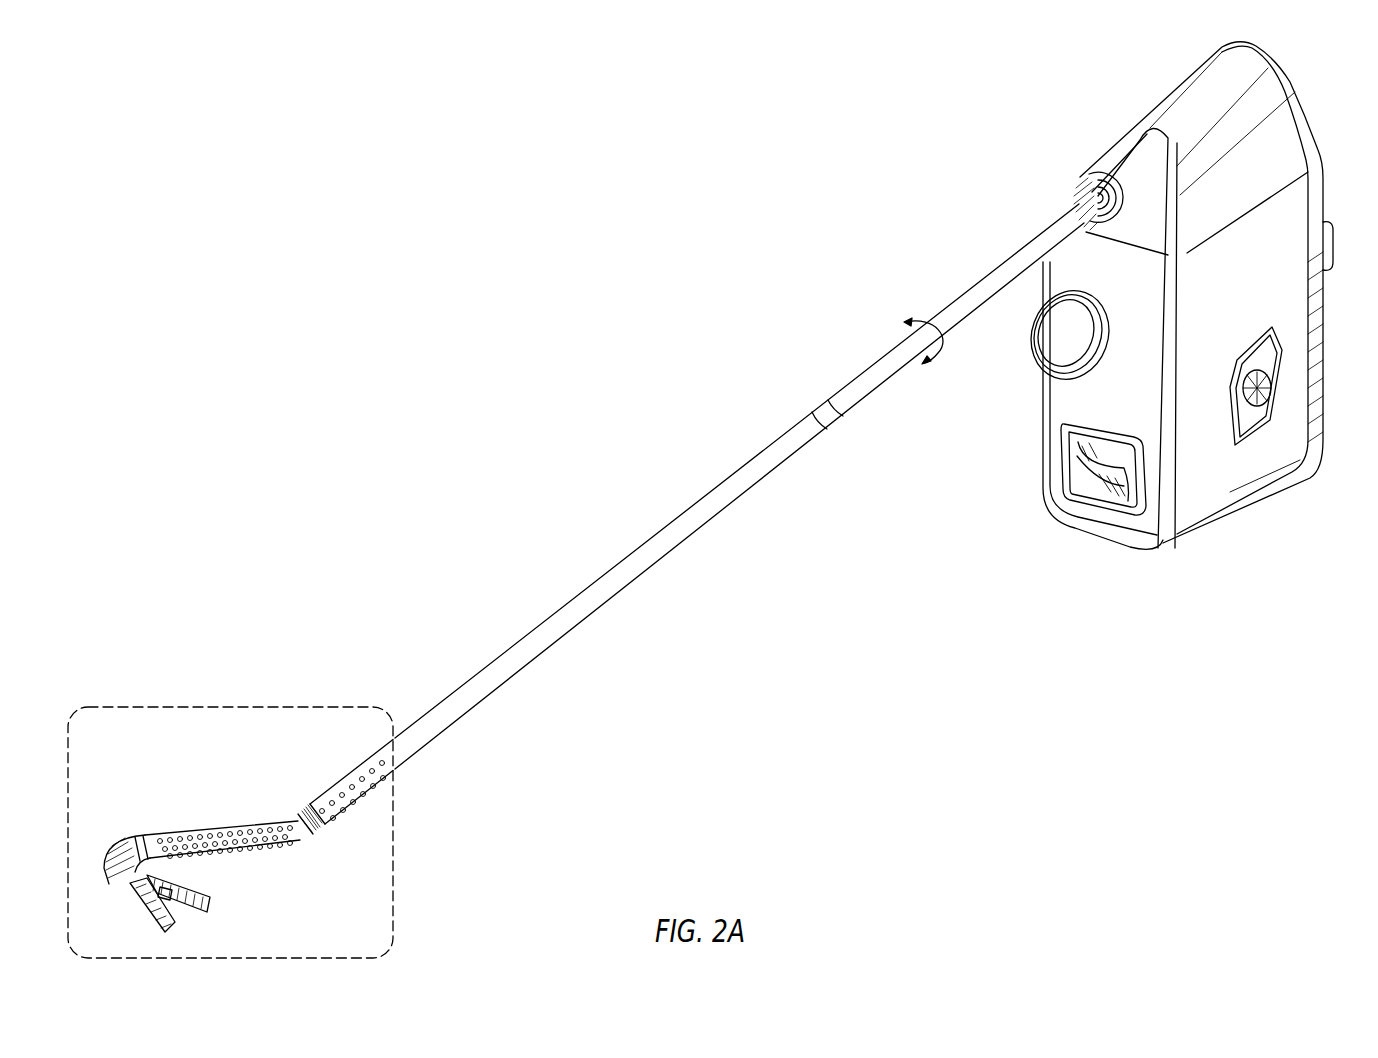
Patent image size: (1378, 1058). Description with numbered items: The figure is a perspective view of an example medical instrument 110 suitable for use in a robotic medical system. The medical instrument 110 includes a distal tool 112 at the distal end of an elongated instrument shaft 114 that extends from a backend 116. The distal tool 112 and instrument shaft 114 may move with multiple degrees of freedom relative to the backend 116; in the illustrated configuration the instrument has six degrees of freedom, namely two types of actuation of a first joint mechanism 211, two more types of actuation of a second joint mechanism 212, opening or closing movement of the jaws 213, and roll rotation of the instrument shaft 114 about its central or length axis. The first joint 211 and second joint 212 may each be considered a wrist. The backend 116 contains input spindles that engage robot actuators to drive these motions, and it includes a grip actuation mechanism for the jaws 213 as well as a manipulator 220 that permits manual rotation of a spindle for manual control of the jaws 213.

The medical instrument 110 is at (766, 157).
The tool 112 is at (260, 742).
The instrument shaft 114 is at (953, 307).
The backend 116 is at (1252, 332).
The first joint mechanism 211 is at (306, 838).
The second joint mechanism 212 is at (108, 853).
The jaws 213 is at (198, 891).
The manipulator 220 is at (1052, 347).